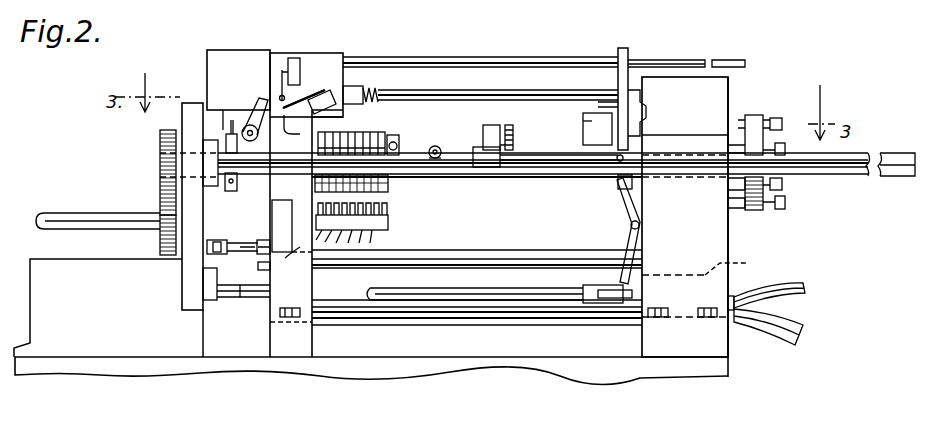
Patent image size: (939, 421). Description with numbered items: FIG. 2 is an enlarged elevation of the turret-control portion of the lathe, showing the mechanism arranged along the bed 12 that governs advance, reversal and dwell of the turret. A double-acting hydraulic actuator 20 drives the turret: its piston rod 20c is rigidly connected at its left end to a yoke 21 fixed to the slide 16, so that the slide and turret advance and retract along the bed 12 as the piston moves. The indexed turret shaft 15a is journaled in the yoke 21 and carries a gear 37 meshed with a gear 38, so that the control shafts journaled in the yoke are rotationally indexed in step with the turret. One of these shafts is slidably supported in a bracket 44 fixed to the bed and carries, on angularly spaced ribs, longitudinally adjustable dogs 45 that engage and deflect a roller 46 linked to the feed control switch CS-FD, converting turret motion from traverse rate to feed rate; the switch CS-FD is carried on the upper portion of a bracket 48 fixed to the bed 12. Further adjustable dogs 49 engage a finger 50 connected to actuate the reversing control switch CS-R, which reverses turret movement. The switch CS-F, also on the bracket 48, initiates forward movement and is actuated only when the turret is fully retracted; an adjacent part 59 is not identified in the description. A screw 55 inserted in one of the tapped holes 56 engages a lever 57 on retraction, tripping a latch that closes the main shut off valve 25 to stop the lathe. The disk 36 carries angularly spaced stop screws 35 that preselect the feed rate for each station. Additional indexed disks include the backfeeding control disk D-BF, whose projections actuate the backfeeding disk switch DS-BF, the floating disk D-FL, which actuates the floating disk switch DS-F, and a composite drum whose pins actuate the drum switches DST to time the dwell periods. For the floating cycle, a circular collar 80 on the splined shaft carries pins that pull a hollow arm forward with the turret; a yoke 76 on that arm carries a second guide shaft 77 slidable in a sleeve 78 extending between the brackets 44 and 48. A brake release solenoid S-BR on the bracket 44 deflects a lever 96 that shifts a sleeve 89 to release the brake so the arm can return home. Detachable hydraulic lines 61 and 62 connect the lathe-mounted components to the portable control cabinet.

The bed 12 is at (100, 362).
The slide 16 is at (96, 313).
The turret shaft 15a is at (96, 212).
The yoke 21 is at (193, 104).
The gear 37 is at (160, 248).
The gear 38 is at (160, 138).
The yoke 76 is at (228, 52).
The feed control switch CS-FD is at (300, 56).
The reversing control switch CS-R is at (310, 86).
The roller 46 is at (247, 124).
The finger 50 is at (293, 135).
The circular collar 80 is at (232, 191).
The switch CS-F is at (272, 232).
The solenoid plunger 59 is at (238, 259).
The piston rod 20c is at (236, 298).
The bracket 48 is at (282, 295).
The sleeve 78 is at (440, 60).
The sleeve 89 is at (524, 96).
The second guide shaft 77 is at (653, 60).
The lever 96 is at (645, 106).
The bracket 44 is at (720, 228).
The main shut off valve 25 is at (738, 264).
The disk 36 is at (753, 115).
The stop screws 35 is at (781, 120).
The backfeeding control disk D-BF is at (362, 130).
The floating disk D-FL is at (396, 136).
The dog 45 is at (436, 146).
The dog 49 is at (485, 125).
The brake release solenoid S-BR is at (583, 122).
The tapped holes 56 is at (612, 157).
The screw 55 is at (622, 182).
The lever 57 is at (626, 206).
The double-acting hydraulic actuator 20 is at (500, 243).
The drum switch DST is at (313, 243).
The floating disk switch DS-F is at (388, 216).
The backfeeding disk switch DS-BF is at (378, 240).
The detachable hydraulic line 62 is at (798, 300).
The detachable hydraulic line 61 is at (780, 332).